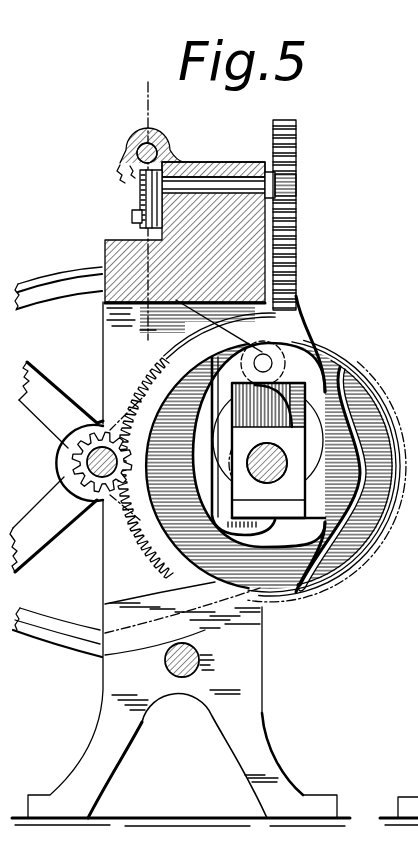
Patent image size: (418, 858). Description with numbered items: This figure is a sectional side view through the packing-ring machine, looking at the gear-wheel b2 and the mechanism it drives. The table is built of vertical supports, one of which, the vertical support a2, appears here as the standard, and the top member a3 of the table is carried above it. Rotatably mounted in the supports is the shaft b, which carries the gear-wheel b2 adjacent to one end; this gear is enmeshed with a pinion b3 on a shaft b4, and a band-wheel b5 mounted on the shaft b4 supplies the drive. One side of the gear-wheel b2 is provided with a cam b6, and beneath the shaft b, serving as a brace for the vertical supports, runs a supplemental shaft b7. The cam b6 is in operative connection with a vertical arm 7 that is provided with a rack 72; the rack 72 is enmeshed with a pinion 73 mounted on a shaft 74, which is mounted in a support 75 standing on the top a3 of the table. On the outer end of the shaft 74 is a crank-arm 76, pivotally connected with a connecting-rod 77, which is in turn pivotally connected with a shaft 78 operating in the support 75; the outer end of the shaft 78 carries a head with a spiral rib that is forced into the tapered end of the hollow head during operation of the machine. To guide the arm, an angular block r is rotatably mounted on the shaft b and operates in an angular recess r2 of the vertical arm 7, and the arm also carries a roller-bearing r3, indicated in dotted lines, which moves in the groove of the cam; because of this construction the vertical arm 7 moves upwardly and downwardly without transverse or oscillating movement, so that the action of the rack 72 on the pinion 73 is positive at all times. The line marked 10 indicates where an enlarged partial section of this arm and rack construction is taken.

The section line 10 is at (147, 211).
The vertical arm 7 is at (299, 298).
The rack 72 is at (297, 239).
The pinion 73 is at (298, 184).
The shaft 74 is at (205, 183).
The support 75 is at (250, 165).
The crank-arm 76 is at (145, 216).
The connecting-rod 77 is at (140, 194).
The shaft 78 is at (128, 155).
The vertical support a2 is at (215, 564).
The top member a3 is at (105, 252).
The shaft b is at (260, 455).
The gear-wheel b2 is at (366, 350).
The pinion b3 is at (96, 428).
The shaft b4 is at (88, 463).
The band-wheel b5 is at (54, 624).
The cam b6 is at (292, 584).
The supplemental shaft b7 is at (170, 665).
The angular block r is at (250, 486).
The angular recess r2 is at (290, 393).
The roller-bearing r3 is at (270, 362).